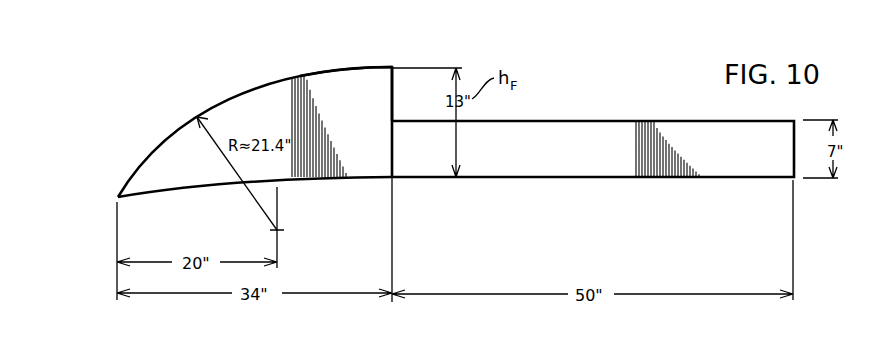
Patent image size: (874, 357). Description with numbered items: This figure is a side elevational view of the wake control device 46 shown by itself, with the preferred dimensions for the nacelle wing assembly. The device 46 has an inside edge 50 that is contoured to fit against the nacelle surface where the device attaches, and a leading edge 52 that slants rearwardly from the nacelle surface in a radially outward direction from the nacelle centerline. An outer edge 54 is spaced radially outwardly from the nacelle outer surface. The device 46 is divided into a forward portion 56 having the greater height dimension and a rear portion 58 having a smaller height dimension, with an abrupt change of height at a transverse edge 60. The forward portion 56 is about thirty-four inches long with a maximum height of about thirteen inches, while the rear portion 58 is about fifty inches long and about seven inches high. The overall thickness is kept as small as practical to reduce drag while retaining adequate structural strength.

The wake control device 46 is at (220, 92).
The inside edge 50 is at (350, 180).
The leading edge 52 is at (121, 185).
The outer edge 54 is at (362, 66).
The forward portion 56 is at (312, 85).
The rear portion 58 is at (610, 128).
The transverse edge 60 is at (393, 88).